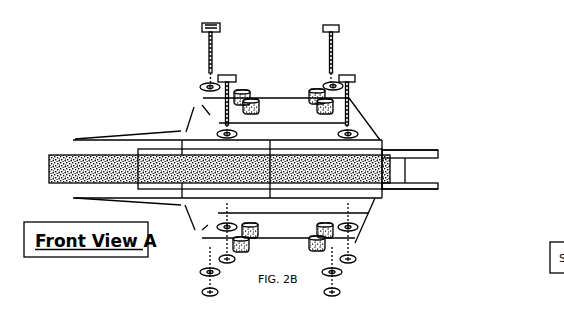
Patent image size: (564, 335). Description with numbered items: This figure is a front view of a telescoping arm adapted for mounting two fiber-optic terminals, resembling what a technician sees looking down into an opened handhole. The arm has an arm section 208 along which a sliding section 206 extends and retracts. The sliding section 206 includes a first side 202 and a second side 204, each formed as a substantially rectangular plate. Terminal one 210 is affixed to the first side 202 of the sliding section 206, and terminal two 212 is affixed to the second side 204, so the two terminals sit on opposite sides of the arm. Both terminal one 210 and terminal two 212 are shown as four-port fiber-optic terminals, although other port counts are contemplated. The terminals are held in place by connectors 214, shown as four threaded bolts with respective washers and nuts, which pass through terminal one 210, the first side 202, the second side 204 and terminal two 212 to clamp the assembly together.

The first side 202 is at (462, 208).
The second side 204 is at (421, 148).
The sliding section 206 is at (409, 173).
The arm section 208 is at (118, 160).
The terminal one 210 is at (359, 209).
The terminal two 212 is at (349, 76).
The connectors 214 is at (202, 25).